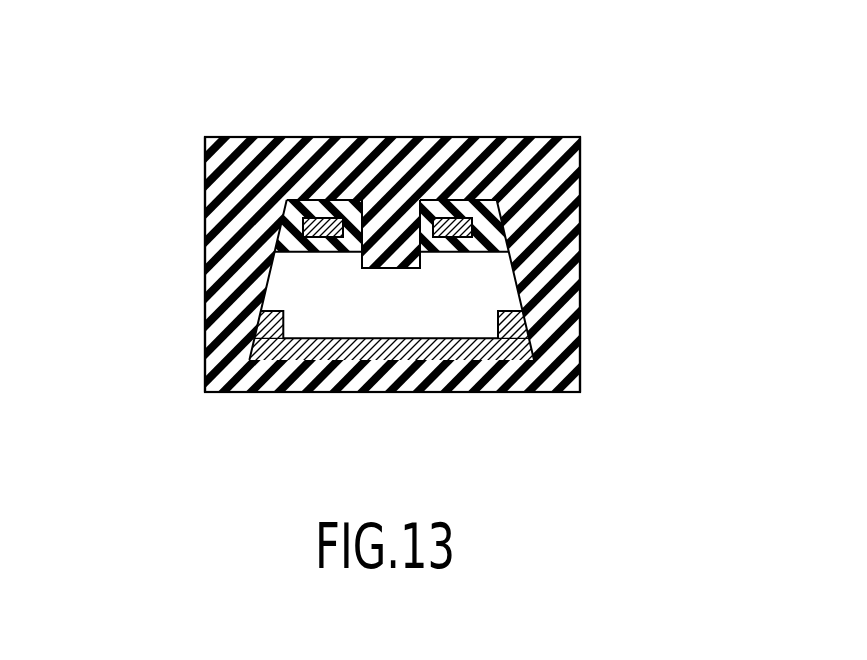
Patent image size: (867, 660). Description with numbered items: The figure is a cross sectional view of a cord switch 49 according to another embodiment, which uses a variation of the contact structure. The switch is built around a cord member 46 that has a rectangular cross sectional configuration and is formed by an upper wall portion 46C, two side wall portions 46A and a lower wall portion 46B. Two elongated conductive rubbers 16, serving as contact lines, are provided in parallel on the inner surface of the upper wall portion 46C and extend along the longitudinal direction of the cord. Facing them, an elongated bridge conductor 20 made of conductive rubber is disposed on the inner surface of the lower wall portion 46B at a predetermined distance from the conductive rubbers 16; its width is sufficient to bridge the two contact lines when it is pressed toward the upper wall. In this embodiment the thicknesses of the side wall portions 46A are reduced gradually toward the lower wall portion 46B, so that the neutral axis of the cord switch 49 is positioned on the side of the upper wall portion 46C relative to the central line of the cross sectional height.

The conductive rubbers 16 is at (292, 227).
The bridge conductor 20 is at (293, 345).
The cord member 46 is at (488, 137).
The side wall portions 46A is at (227, 290).
The lower wall portion 46B is at (360, 393).
The upper wall portion 46C is at (318, 137).
The cord switch 49 is at (620, 100).